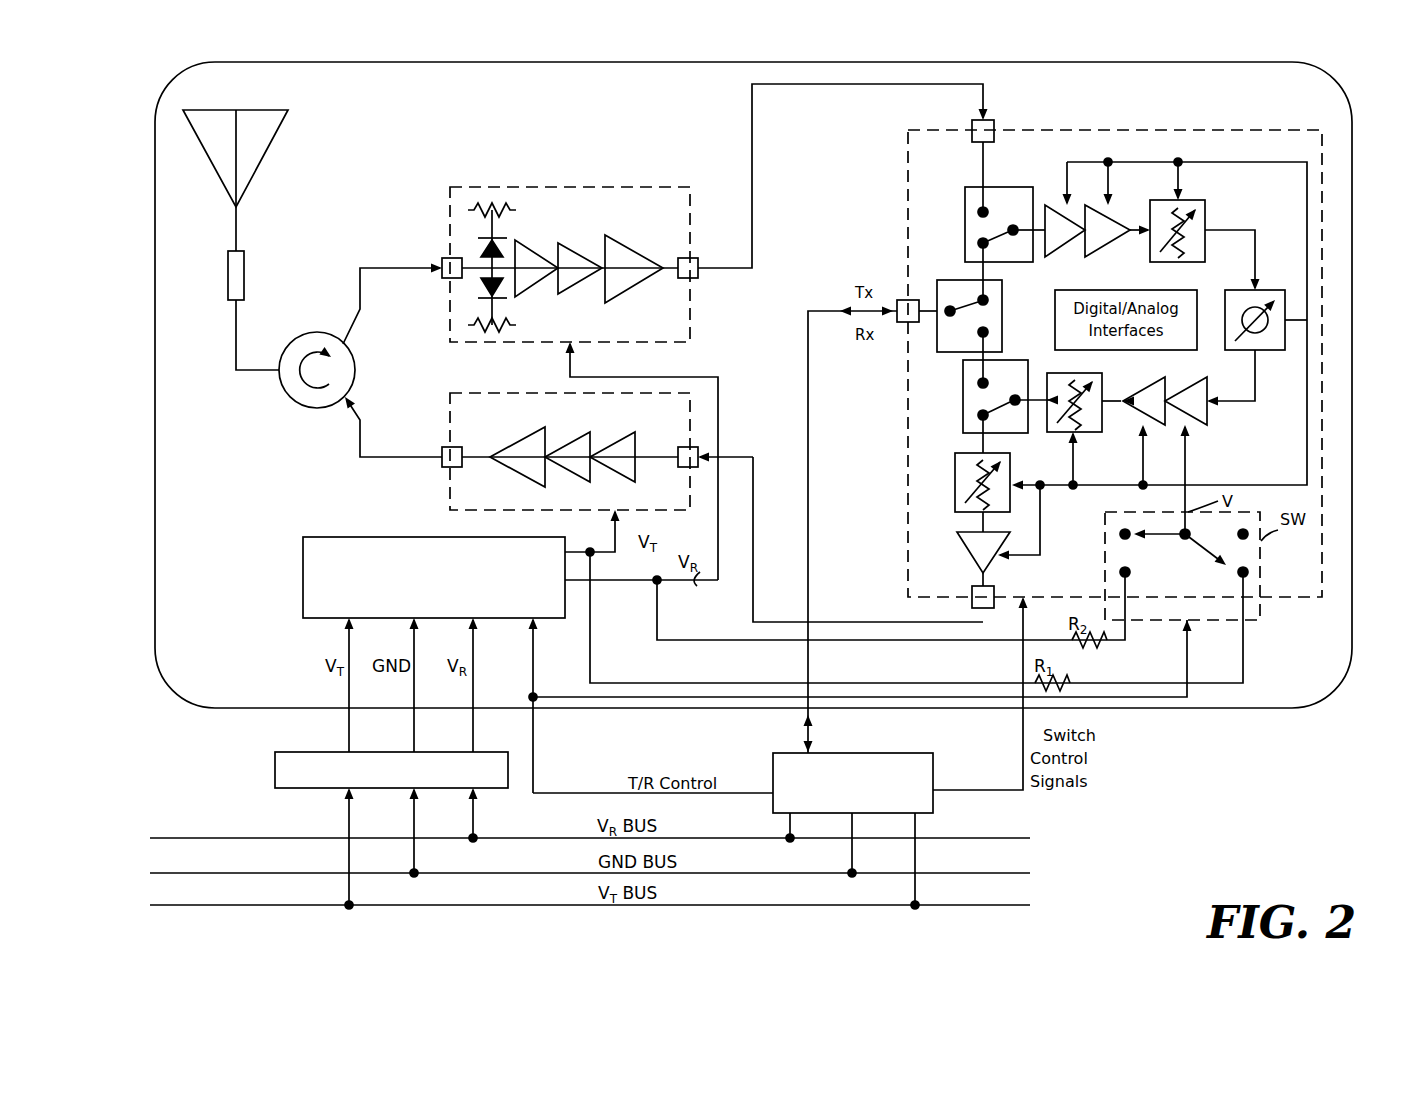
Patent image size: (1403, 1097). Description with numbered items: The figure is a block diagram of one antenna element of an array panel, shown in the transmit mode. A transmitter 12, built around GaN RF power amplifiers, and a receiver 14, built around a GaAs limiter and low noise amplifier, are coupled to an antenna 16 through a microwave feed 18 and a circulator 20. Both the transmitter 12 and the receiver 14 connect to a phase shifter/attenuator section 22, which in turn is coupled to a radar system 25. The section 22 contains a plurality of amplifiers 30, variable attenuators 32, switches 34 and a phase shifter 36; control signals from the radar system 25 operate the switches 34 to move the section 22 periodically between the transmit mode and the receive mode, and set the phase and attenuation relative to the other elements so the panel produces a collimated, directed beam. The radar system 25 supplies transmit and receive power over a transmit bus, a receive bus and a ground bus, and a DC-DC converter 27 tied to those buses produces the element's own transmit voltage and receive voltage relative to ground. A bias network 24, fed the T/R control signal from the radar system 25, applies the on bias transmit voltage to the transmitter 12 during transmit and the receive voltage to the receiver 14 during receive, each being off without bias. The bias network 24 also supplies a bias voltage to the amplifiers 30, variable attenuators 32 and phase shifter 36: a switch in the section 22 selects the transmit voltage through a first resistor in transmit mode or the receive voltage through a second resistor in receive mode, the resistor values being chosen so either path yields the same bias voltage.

The transmitter 12 is at (570, 451).
The receiver 14 is at (570, 264).
The antenna 16 is at (262, 158).
The microwave feed 18 is at (243, 256).
The circulator 20 is at (355, 370).
The phase shifter/attenuator section 22 is at (1115, 363).
The bias network 24 is at (434, 577).
The radar system 25 is at (853, 783).
The DC-DC converter 27 is at (391, 770).
The amplifiers 30 is at (1060, 205).
The variable attenuators 32 is at (1205, 206).
The switches 34 is at (963, 231).
The phase shifter 36 is at (1275, 290).